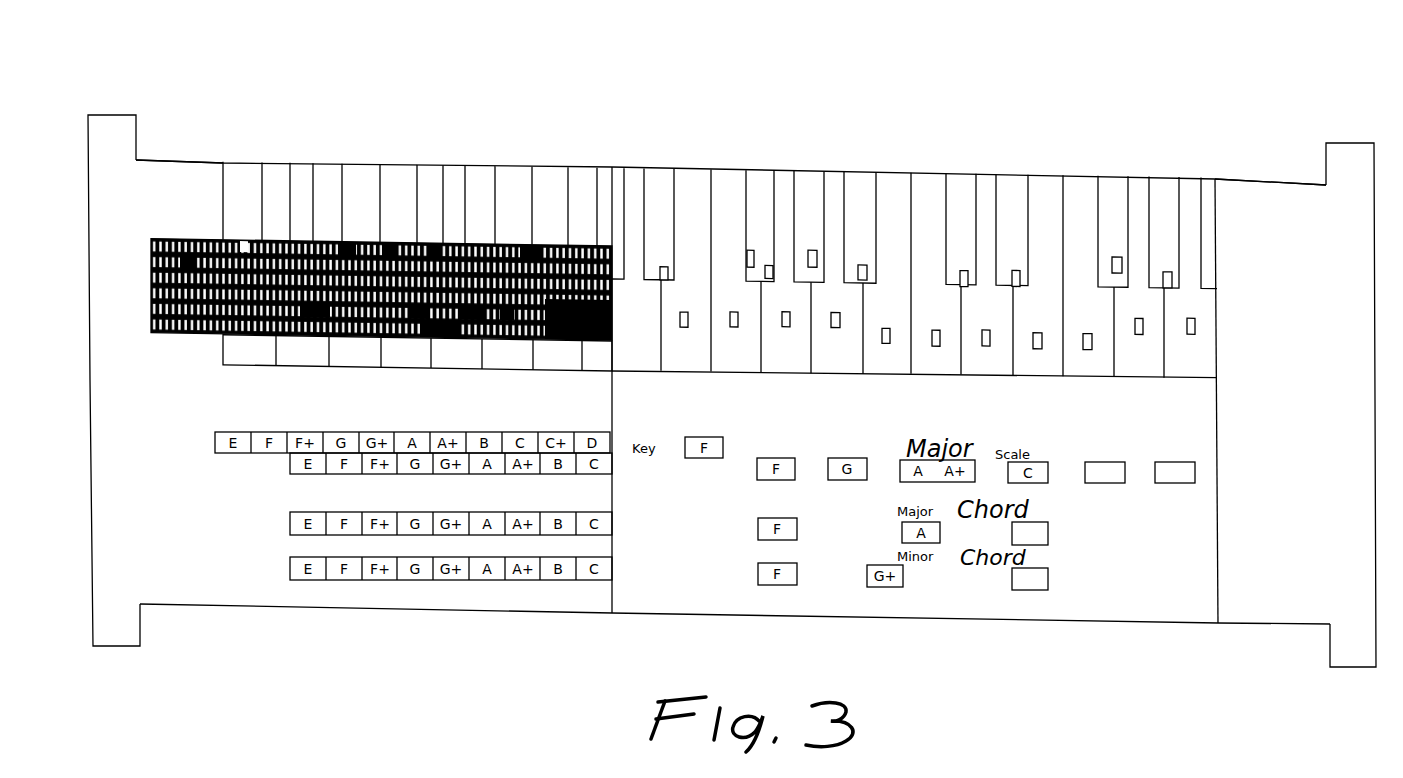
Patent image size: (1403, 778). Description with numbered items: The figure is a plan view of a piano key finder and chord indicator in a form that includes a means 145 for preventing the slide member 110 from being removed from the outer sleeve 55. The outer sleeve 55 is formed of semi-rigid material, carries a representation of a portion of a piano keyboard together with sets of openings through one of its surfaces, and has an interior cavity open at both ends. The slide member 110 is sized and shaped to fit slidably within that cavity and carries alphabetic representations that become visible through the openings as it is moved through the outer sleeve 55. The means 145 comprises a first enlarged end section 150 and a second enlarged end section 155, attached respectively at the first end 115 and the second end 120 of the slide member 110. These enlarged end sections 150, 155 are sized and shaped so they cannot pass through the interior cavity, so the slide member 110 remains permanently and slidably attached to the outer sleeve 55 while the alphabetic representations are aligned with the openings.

The outer sleeve 55 is at (905, 172).
The slide member 110 is at (410, 608).
The first end 115 is at (1377, 523).
The second end 120 is at (88, 188).
The means for preventing the slide member from being removed 145 is at (1327, 168).
The first enlarged end section 150 is at (1348, 143).
The second enlarged end section 155 is at (103, 648).